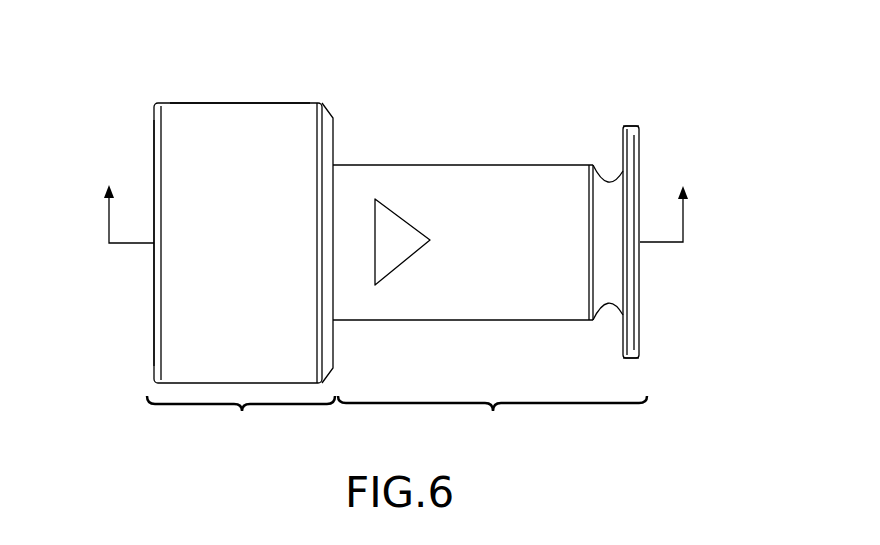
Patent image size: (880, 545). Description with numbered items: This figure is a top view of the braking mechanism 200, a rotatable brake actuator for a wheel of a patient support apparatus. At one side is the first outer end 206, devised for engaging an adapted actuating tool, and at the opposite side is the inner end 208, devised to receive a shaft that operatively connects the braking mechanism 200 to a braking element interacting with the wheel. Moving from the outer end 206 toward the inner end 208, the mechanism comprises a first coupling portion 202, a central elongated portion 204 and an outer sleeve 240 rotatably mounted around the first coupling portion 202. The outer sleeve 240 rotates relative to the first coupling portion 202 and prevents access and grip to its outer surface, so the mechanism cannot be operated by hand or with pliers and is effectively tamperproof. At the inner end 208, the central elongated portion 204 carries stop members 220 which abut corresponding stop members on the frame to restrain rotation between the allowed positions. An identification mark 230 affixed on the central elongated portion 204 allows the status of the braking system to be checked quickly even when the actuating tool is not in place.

The braking mechanism 200 is at (424, 237).
The first coupling portion 202 is at (213, 237).
The central elongated portion 204 is at (567, 275).
The first outer end 206 is at (148, 143).
The inner end 208 is at (655, 266).
The stop members 220 is at (632, 143).
The identification mark 230 is at (398, 255).
The outer sleeve 240 is at (268, 103).